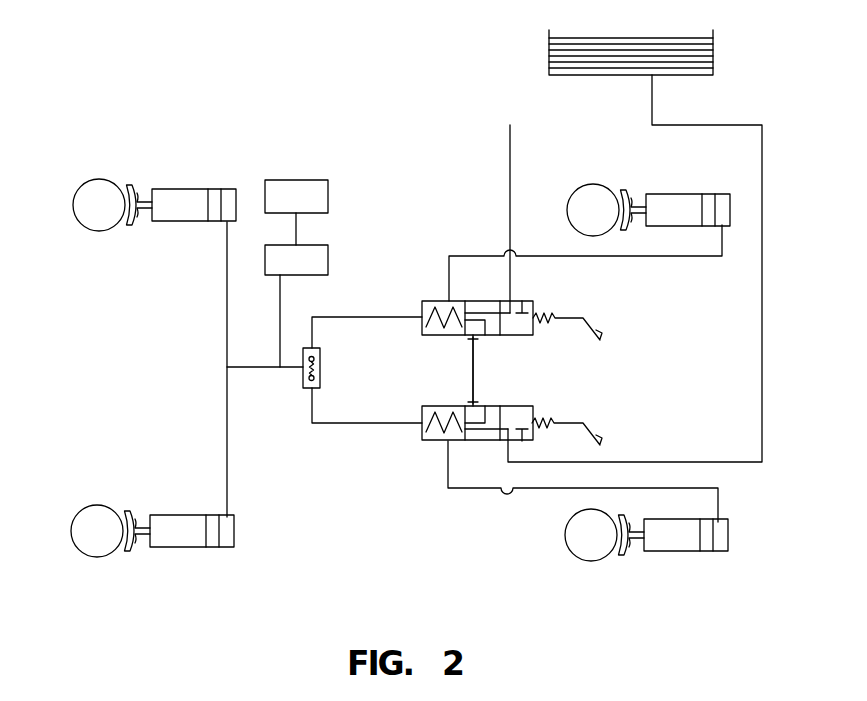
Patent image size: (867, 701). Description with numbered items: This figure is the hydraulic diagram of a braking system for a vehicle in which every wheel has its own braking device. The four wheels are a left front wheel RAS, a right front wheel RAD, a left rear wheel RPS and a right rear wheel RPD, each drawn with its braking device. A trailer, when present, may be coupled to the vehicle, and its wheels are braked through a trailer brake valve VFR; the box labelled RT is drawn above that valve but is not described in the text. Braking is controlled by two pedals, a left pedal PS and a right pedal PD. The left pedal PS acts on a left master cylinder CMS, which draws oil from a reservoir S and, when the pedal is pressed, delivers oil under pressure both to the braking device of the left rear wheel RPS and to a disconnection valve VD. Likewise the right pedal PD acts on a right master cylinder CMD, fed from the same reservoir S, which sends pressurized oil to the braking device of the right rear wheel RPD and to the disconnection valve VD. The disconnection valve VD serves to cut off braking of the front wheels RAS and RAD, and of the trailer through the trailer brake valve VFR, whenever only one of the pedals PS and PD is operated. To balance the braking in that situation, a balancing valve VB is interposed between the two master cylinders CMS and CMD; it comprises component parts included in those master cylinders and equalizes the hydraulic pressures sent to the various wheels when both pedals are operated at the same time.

The right front wheel RAD is at (92, 197).
The left front wheel RAS is at (86, 525).
The right rear wheel RPD is at (580, 207).
The left rear wheel RPS is at (582, 535).
The reservoir S is at (560, 53).
The control unit RT is at (296, 212).
The trailer brake valve VFR is at (296, 260).
The disconnection valve VD is at (322, 375).
The right master cylinder CMD is at (427, 302).
The left master cylinder CMS is at (427, 433).
The balancing valve VB is at (487, 337).
The right pedal PD is at (593, 330).
The left pedal PS is at (594, 436).